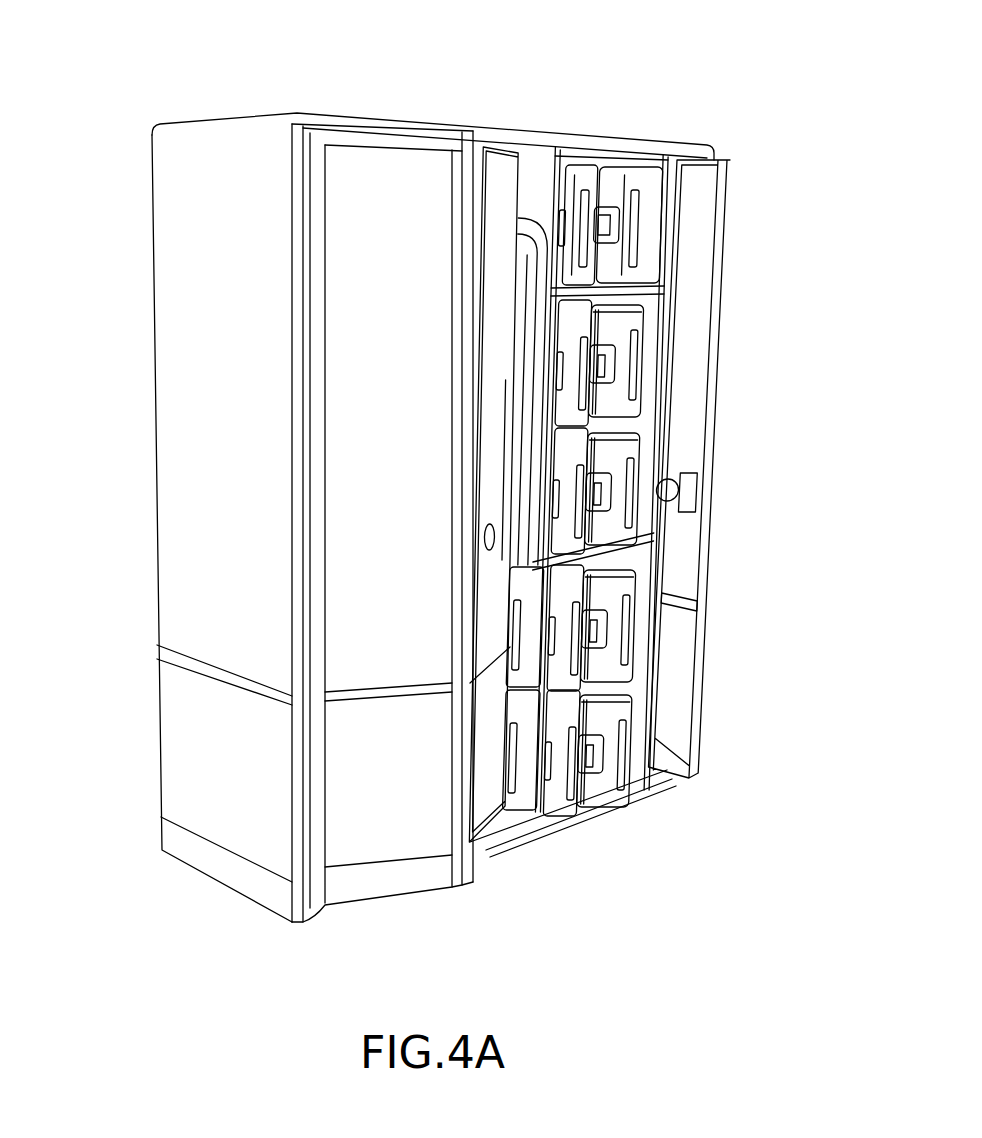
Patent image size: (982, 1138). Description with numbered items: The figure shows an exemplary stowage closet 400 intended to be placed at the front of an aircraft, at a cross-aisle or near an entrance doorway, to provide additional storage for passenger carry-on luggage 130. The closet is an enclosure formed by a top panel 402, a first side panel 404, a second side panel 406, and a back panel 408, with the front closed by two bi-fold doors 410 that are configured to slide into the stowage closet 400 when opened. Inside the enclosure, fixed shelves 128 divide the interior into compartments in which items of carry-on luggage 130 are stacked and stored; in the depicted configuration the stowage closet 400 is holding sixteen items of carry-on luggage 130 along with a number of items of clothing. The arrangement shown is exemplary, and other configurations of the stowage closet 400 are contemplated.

The stowage closet 400 is at (205, 75).
The top panel 402 is at (488, 130).
The first side panel 404 is at (220, 528).
The second side panel 406 is at (720, 310).
The back panel 408 is at (153, 387).
The bi-fold doors 410 is at (472, 843).
The fixed shelves 128 is at (592, 540).
The carry-on luggage 130 is at (612, 733).